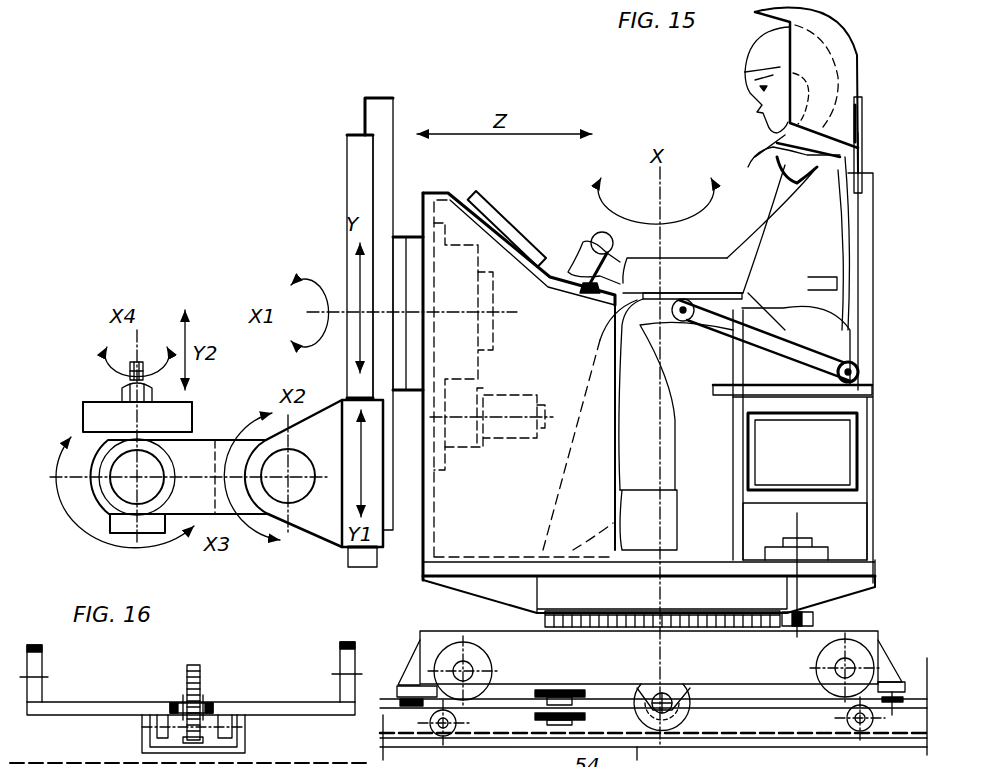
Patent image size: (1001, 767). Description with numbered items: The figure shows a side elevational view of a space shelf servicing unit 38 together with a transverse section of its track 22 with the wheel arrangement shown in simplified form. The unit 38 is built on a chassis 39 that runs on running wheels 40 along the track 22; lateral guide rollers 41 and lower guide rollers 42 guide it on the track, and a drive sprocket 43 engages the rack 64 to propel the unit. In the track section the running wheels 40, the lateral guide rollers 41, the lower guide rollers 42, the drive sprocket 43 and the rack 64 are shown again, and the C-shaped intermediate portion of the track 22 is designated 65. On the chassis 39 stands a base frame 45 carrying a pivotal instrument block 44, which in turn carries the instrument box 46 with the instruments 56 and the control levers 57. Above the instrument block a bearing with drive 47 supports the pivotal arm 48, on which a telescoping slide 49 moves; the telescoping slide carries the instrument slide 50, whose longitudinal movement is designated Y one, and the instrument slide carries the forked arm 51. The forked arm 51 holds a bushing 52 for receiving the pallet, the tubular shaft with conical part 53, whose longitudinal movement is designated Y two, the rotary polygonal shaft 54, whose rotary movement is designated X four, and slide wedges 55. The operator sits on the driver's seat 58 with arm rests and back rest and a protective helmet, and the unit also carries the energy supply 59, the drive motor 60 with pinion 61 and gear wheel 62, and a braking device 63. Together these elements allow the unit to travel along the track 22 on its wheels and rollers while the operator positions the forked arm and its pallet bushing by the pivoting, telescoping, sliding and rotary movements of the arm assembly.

In FIG. 15, the track 22 is at (508, 700).
In FIG. 16, the track 22 is at (98, 707).
In FIG. 15, the space shelf servicing unit 38 is at (503, 325).
In FIG. 15, the chassis 39 is at (510, 643).
In FIG. 15, the running wheels 40 is at (455, 653).
In FIG. 16, the running wheels 40 is at (42, 663).
In FIG. 15, the lateral guide rollers 41 is at (405, 680).
In FIG. 16, the lateral guide rollers 41 is at (210, 702).
In FIG. 15, the lower guide rollers 42 is at (445, 736).
In FIG. 16, the lower guide rollers 42 is at (233, 730).
In FIG. 15, the drive sprocket 43 is at (700, 688).
In FIG. 16, the drive sprocket 43 is at (200, 678).
In FIG. 15, the pivotal instrument block 44 is at (443, 528).
In FIG. 15, the base frame 45 is at (817, 590).
In FIG. 15, the instrument box 46 is at (458, 233).
In FIG. 15, the bearing with drive 47 is at (413, 250).
In FIG. 15, the pivotal arm 48 is at (385, 118).
In FIG. 15, the telescoping slide 49 is at (358, 173).
In FIG. 15, the instrument slide 50 is at (318, 513).
In FIG. 15, the forked arm 51 is at (218, 500).
In FIG. 15, the bushing 52 is at (173, 417).
In FIG. 15, the tubular shaft with conical part 53 is at (122, 397).
In FIG. 15, the rotary polygonal shaft 54 is at (130, 370).
In FIG. 15, the slide wedges 55 is at (107, 405).
In FIG. 15, the instruments 56 is at (517, 232).
In FIG. 15, the control levers 57 is at (593, 237).
In FIG. 15, the driver's seat 58 is at (867, 368).
In FIG. 15, the energy supply 59 is at (838, 453).
In FIG. 15, the drive motor 60 is at (815, 552).
In FIG. 15, the pinion 61 is at (813, 618).
In FIG. 15, the gear wheel 62 is at (750, 612).
In FIG. 15, the braking device 63 is at (568, 690).
In FIG. 15, the rack 64 is at (400, 740).
In FIG. 16, the C-shaped intermediate portion of the track 65 is at (143, 735).